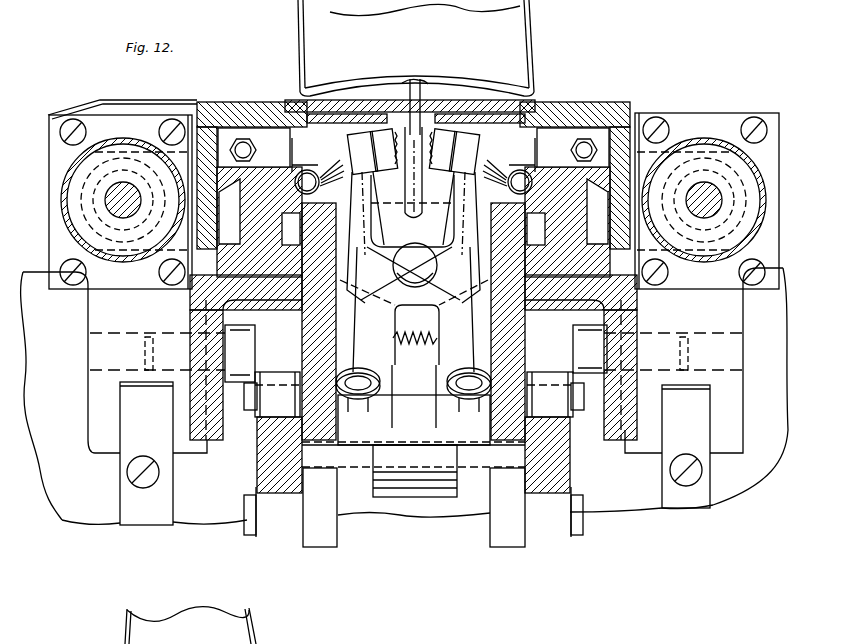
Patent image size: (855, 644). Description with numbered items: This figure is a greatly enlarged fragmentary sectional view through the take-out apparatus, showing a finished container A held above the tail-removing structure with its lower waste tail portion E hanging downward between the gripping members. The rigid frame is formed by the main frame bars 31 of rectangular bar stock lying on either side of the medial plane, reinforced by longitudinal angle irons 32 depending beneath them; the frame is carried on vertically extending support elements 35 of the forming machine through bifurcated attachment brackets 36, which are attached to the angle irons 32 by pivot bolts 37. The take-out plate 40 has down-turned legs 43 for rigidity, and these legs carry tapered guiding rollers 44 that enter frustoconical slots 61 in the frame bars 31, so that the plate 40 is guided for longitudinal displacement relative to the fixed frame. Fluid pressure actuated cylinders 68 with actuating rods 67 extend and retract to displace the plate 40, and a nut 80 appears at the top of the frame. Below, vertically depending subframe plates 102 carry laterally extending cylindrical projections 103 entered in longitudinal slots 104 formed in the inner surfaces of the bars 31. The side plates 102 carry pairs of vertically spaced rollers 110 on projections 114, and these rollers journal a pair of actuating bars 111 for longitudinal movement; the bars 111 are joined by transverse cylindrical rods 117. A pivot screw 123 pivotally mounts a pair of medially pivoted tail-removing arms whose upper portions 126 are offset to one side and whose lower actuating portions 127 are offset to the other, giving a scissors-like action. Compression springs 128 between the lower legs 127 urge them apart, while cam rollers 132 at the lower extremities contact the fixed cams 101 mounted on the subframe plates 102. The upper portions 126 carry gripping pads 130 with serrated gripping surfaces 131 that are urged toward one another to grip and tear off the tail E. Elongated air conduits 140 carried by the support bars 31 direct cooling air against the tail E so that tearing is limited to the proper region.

The container A is at (539, 36).
The take-out plate 40 is at (552, 100).
The down-turned legs 43 is at (212, 167).
The slots 61 is at (245, 195).
The main frame bars 31 is at (227, 272).
The longitudinal angle irons 32 is at (220, 440).
The subframe plates 102 is at (312, 357).
The tapered guiding rollers 44 is at (223, 211).
The longitudinal slots 104 is at (529, 233).
The nut 80 is at (586, 134).
The fluid pressure actuated cylinders 68 is at (60, 216).
The actuating rods 67 is at (105, 201).
The air conduits 140 is at (306, 175).
The gripping pads 130 is at (354, 159).
The serrated gripping surfaces 131 is at (413, 237).
The tail portion E is at (410, 195).
The upper portions 126 is at (438, 203).
The pivot screw 123 is at (407, 274).
The compression springs 128 is at (414, 337).
The lower actuating portions 127 is at (384, 352).
The cam rollers 132 is at (446, 389).
The fixed cams 101 is at (414, 446).
The actuating bars 111 is at (267, 461).
The projections 114 is at (312, 497).
The transverse cylindrical rods 117 is at (507, 507).
The pivot bolts 37 is at (251, 342).
The cylindrical projections 103 is at (413, 315).
The rollers 110 is at (252, 415).
The attachment brackets 36 is at (100, 437).
The support elements 35 is at (141, 516).